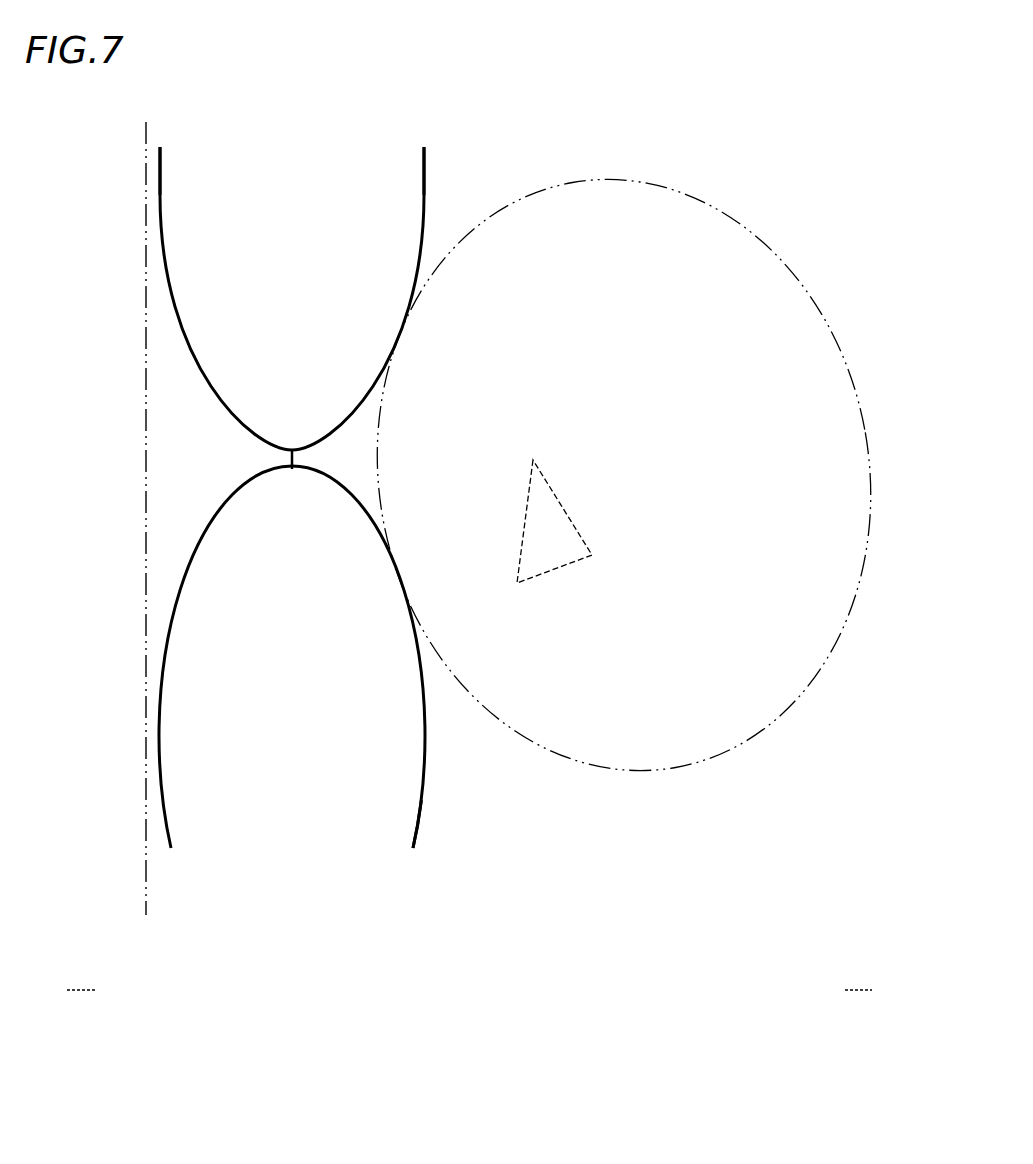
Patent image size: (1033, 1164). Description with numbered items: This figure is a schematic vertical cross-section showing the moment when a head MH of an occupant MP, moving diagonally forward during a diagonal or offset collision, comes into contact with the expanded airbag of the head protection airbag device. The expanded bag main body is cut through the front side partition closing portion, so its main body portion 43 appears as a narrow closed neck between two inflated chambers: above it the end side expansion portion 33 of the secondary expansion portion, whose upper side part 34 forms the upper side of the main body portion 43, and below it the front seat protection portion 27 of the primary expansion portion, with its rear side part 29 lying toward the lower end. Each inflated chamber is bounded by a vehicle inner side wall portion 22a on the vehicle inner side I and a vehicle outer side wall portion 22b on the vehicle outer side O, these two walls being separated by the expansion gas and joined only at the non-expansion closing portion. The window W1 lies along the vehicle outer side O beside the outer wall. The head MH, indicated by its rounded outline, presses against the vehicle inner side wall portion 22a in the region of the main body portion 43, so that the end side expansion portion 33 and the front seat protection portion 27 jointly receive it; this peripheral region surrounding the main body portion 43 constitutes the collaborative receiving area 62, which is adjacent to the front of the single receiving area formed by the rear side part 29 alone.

The vehicle inner side wall portion 22a is at (426, 162).
The vehicle outer side wall portion 22b is at (160, 213).
The upper side part 34 is at (334, 281).
The end side expansion portion 33 is at (292, 298).
The main body portion 43 is at (170, 441).
The rear side part 29 is at (346, 657).
The front seat protection portion 27 is at (431, 729).
The collaborative receiving area 62 is at (457, 866).
The head MH is at (624, 520).
The occupant MP is at (702, 778).
The window W1 is at (146, 572).
The vehicle outer side O is at (81, 976).
The vehicle inner side I is at (858, 976).